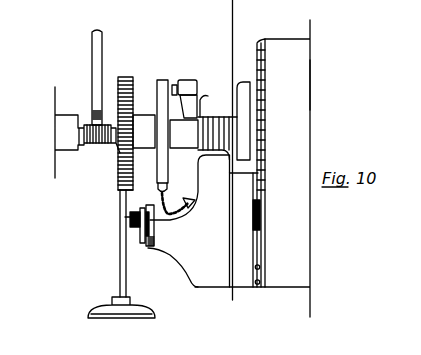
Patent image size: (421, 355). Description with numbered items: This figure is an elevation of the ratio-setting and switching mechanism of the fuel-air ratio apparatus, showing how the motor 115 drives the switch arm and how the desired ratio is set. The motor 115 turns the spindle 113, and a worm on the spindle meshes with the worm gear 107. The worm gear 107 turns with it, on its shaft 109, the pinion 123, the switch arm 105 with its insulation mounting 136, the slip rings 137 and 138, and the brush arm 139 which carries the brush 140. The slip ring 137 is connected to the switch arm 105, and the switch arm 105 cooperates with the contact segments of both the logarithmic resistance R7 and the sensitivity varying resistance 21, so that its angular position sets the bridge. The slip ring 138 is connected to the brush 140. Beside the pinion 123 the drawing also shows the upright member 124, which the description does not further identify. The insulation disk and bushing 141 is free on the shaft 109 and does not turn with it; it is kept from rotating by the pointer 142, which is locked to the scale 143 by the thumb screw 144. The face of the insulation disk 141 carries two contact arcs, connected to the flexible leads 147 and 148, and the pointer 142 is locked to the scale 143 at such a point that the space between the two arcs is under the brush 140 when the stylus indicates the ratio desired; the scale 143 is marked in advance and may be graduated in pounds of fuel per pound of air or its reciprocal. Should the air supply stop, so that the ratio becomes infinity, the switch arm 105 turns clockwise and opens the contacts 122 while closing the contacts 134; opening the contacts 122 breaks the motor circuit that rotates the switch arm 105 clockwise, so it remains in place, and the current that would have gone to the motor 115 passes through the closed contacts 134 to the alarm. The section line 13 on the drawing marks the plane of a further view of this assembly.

The section line 13 is at (226, 6).
The sensitivity varying resistance 21 is at (298, 110).
The logarithmic resistance R7 is at (298, 84).
The switch arm 105 is at (257, 43).
The worm gear 107 is at (118, 186).
The shaft 109 is at (138, 115).
The spindle 113 is at (120, 273).
The motor 115 is at (90, 311).
The contacts 122 is at (267, 246).
The pinion 123 is at (86, 113).
The rod 124 is at (92, 57).
The contacts 134 is at (262, 256).
The insulation mounting 136 is at (245, 101).
The slip ring 137 is at (202, 100).
The slip ring 138 is at (198, 112).
The brush arm 139 is at (183, 93).
The brush 140 is at (177, 80).
The insulation disk and bushing 141 is at (155, 112).
The pointer 142 is at (139, 233).
The scale 143 is at (148, 247).
The thumb screw 144 is at (129, 226).
The flexible lead 147 is at (183, 222).
The flexible lead 148 is at (182, 230).